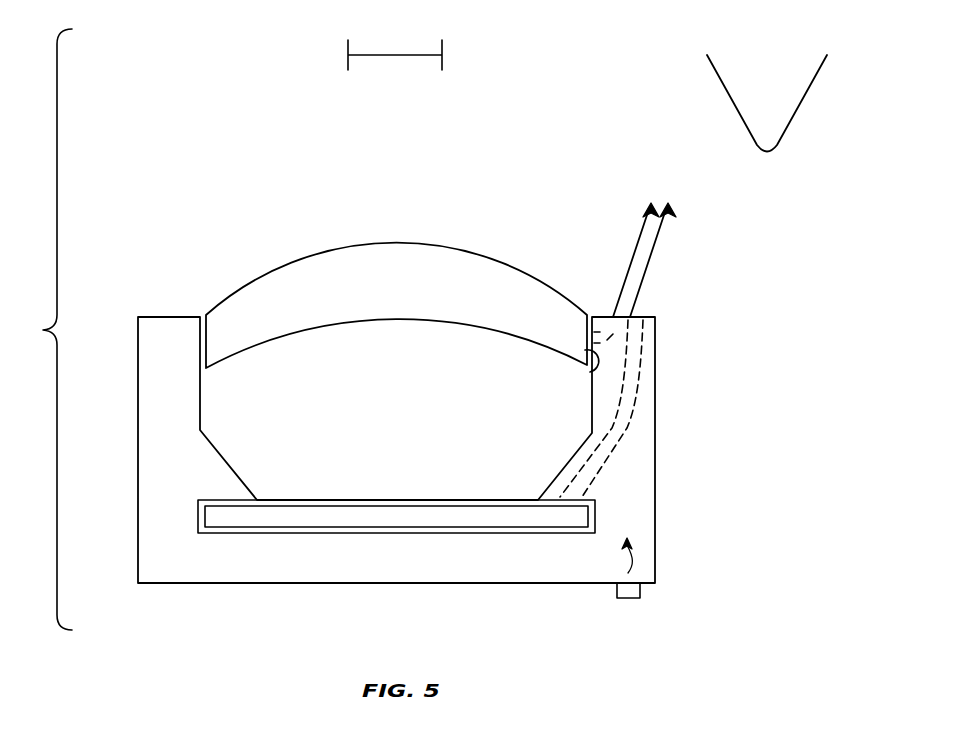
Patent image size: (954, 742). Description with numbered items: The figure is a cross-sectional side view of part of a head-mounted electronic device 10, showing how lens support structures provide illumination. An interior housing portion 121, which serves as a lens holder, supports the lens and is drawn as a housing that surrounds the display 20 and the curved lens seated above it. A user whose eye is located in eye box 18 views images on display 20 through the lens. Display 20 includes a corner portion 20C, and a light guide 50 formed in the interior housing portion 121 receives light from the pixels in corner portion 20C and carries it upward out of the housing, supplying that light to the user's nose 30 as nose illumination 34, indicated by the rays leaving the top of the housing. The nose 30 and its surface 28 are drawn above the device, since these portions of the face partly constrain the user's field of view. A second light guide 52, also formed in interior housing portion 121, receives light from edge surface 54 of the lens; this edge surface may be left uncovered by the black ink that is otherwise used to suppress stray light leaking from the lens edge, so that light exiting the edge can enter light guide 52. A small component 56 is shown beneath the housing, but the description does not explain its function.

The electronic device 10 is at (44, 329).
The eye box 18 is at (442, 58).
The display 20 is at (222, 533).
The corner portion 20C is at (560, 517).
The surface 28 is at (797, 118).
The nose 30 is at (829, 98).
The nose illumination 34 is at (637, 240).
The light guide 50 is at (635, 407).
The light guide 52 is at (612, 328).
The edge surface 54 is at (590, 372).
The light source 56 is at (641, 592).
The interior housing portion 121 is at (657, 497).